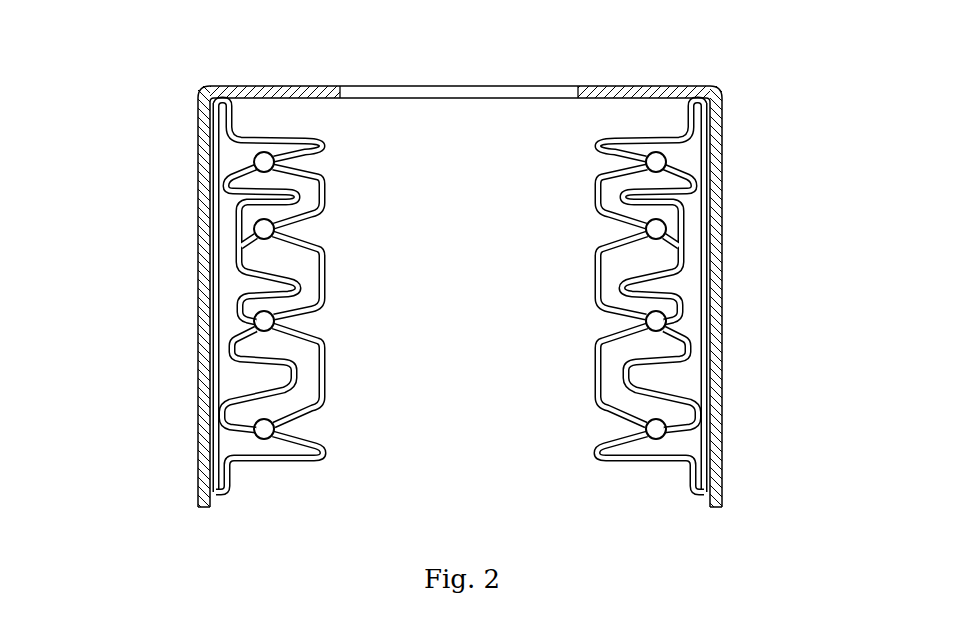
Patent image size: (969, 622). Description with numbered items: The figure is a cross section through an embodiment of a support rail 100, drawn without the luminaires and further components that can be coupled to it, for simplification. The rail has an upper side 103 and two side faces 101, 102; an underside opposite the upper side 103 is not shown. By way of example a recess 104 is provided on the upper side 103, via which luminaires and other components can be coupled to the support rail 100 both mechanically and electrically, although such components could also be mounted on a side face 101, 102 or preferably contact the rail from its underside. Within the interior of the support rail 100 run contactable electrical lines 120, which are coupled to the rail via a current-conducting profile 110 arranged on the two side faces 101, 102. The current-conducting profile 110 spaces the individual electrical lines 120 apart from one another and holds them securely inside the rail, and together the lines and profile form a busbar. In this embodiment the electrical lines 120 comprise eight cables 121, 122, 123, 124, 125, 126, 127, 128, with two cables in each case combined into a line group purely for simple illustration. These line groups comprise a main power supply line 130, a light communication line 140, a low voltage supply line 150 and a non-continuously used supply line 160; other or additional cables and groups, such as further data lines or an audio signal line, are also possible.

The support rail 100 is at (448, 282).
The side face 101 is at (197, 475).
The side face 102 is at (723, 473).
The upper side 103 is at (597, 90).
The recess 104 is at (383, 90).
The current-conducting profile 110 is at (307, 285).
The electrical lines 120 is at (290, 478).
The cable 121 is at (262, 162).
The cable 122 is at (262, 229).
The cable 123 is at (262, 321).
The cable 124 is at (262, 429).
The cable 125 is at (658, 161).
The cable 126 is at (658, 229).
The cable 127 is at (658, 323).
The cable 128 is at (658, 431).
The main power supply line 130 is at (765, 375).
The light communication line 140 is at (153, 375).
The low voltage supply line 150 is at (765, 208).
The non-continuously used supply line 160 is at (153, 182).